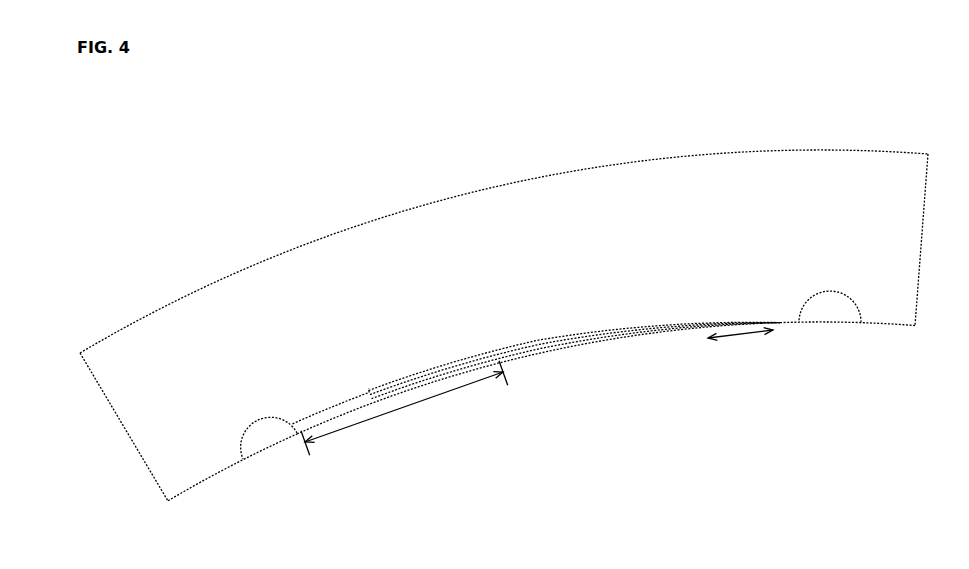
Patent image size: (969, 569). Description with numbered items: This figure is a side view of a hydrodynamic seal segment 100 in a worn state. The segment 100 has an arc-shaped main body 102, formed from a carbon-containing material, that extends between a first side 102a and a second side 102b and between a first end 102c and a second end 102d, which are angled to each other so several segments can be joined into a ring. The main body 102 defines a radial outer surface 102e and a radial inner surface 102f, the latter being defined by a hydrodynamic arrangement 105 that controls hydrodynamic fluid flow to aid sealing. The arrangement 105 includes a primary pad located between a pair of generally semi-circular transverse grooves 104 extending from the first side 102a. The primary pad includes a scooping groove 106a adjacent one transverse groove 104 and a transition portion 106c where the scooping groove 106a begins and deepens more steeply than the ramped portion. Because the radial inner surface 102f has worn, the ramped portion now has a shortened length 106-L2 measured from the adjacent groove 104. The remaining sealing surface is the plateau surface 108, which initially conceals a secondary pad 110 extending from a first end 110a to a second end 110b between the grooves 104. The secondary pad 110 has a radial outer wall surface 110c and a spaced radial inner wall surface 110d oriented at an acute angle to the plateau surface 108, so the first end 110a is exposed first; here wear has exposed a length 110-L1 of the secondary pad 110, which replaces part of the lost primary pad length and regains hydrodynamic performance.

The segment 100 is at (110, 242).
The main body 102 is at (104, 397).
The first side 102a is at (737, 185).
The second side 102b is at (893, 325).
The first end 102c is at (128, 441).
The second end 102d is at (922, 225).
The radial outer surface 102e is at (807, 150).
The radial inner surface 102f is at (190, 486).
The transverse grooves 104 is at (256, 433).
The hydrodynamic arrangement 105 is at (461, 426).
The scooping groove 106a is at (302, 431).
The transition portion 106c is at (317, 412).
The worn ramped portion length 106-L2 is at (404, 408).
The plateau surface 108 is at (785, 323).
The secondary pad 110 is at (473, 360).
The first end 110a is at (780, 323).
The second end 110b is at (380, 388).
The radial outer wall surface 110c is at (598, 328).
The radial inner wall surface 110d is at (598, 337).
The exposed secondary pad length 110-L1 is at (729, 349).